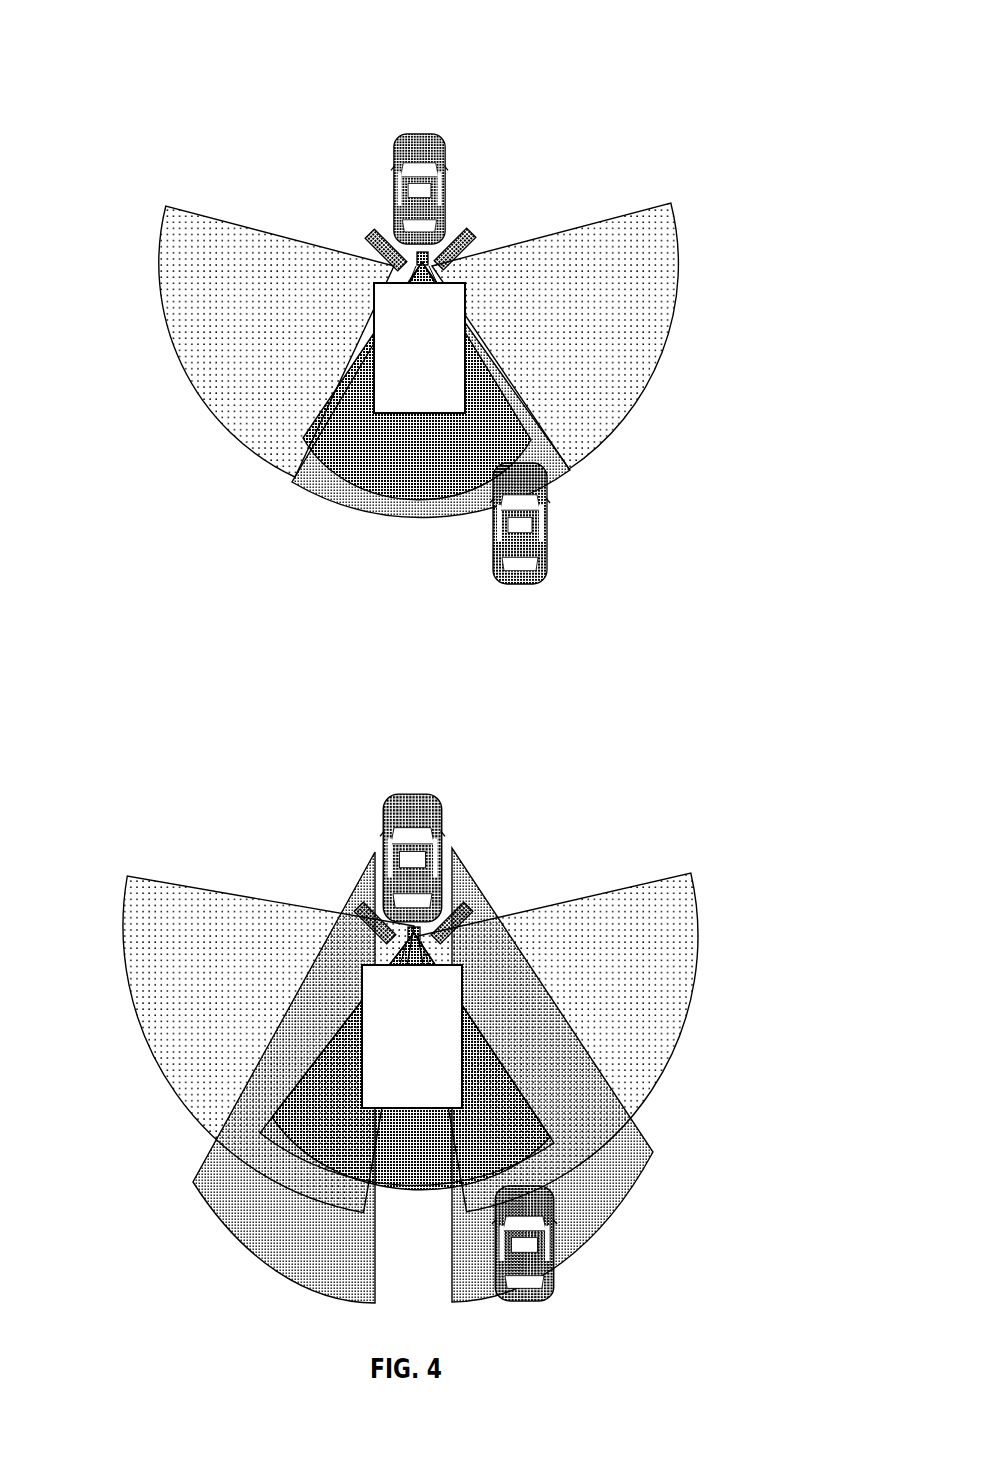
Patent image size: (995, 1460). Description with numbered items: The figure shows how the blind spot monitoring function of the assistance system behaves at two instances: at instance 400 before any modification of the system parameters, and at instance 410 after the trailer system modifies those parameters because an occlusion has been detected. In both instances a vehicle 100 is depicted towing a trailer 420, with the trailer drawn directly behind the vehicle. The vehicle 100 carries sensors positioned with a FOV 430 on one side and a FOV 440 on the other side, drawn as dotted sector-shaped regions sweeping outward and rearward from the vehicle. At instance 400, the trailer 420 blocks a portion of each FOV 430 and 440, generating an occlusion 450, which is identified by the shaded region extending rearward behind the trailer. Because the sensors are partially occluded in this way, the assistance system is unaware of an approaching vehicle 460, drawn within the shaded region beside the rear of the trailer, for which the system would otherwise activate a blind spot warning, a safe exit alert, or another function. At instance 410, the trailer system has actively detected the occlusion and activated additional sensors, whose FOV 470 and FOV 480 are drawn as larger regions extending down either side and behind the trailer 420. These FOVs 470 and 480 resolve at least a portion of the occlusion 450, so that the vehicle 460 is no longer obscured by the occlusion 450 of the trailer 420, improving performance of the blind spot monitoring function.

The vehicle 100 is at (440, 131).
The instance before modification 400 is at (425, 304).
The instance after modification 410 is at (414, 996).
The trailer 420 is at (439, 375).
The FOV 430 is at (167, 311).
The FOV 440 is at (665, 337).
The occlusion 450 is at (412, 464).
The approaching vehicle 460 is at (550, 520).
The FOV 470 is at (193, 1182).
The FOV 480 is at (653, 1152).